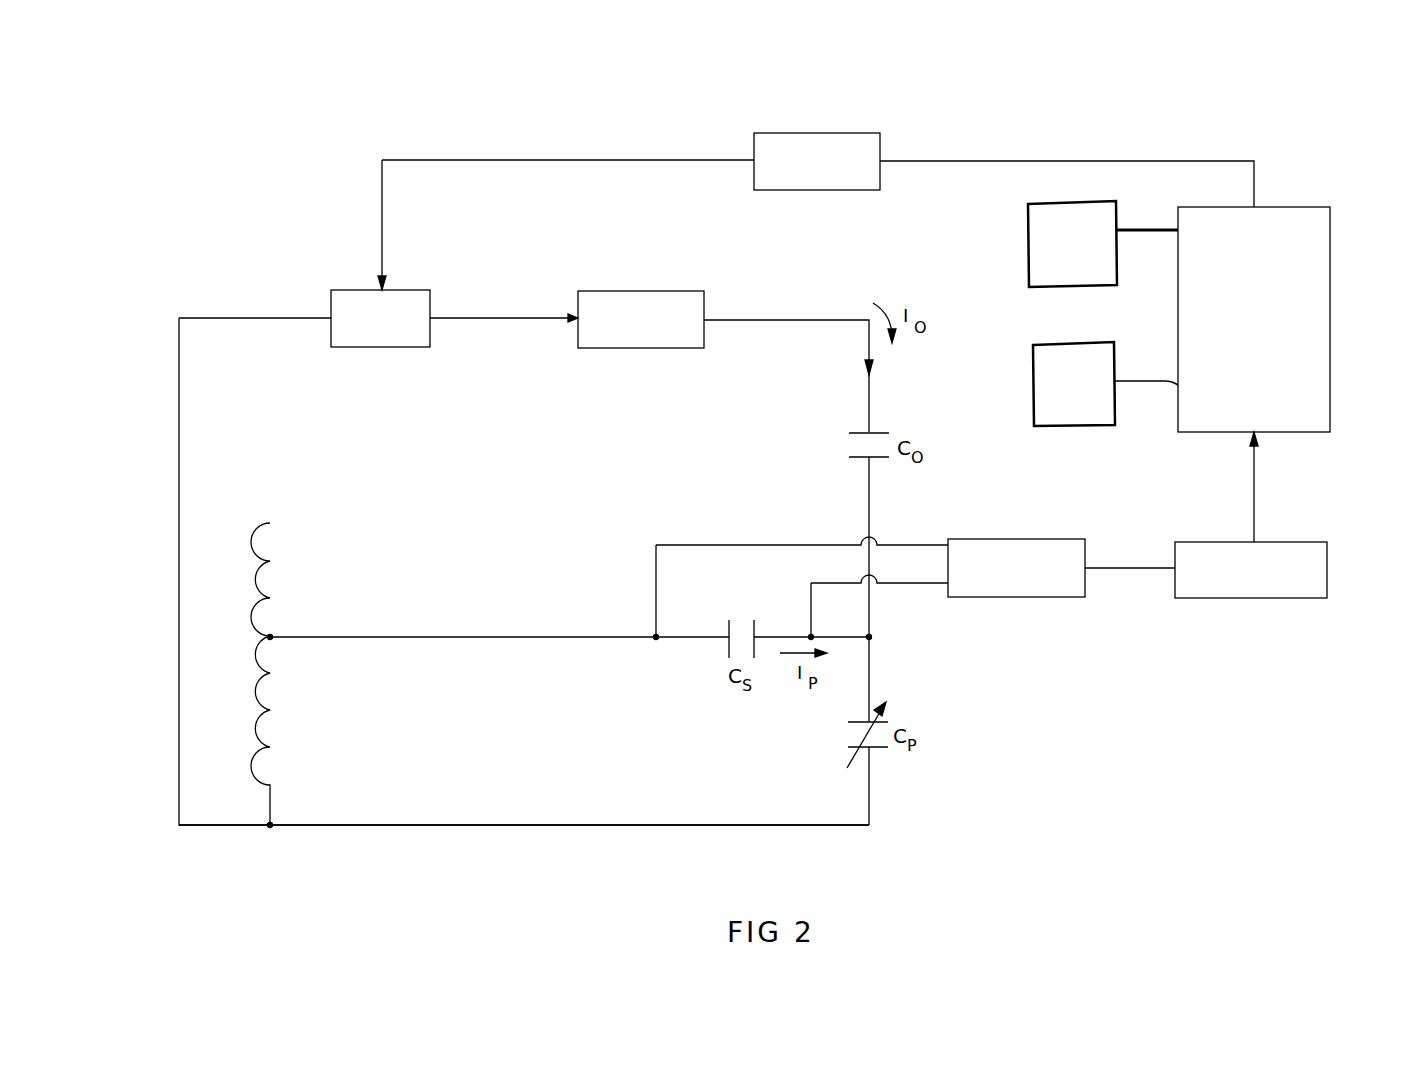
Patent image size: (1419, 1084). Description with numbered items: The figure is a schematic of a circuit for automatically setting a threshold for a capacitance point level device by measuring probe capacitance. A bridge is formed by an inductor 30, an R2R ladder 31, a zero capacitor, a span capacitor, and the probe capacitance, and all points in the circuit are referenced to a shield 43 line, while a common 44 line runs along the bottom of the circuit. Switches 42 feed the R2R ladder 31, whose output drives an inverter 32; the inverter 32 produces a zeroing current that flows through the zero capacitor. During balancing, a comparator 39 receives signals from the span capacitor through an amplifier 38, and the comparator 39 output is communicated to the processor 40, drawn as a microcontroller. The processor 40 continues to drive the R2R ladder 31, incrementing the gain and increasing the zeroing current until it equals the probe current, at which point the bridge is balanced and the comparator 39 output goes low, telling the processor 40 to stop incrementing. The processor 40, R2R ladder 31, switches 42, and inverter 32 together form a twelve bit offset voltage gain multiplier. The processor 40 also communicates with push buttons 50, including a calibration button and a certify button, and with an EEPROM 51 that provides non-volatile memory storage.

The inductor 30 is at (270, 560).
The R2R ladder 31 is at (400, 290).
The inverter 32 is at (682, 291).
The amplifier 38 is at (1025, 538).
The comparator 39 is at (1258, 600).
The processor 40 is at (1330, 312).
The switches 42 is at (858, 132).
The shield 43 is at (377, 639).
The common line 44 is at (548, 827).
The push buttons 50 is at (1028, 225).
The EEPROM 51 is at (1032, 378).